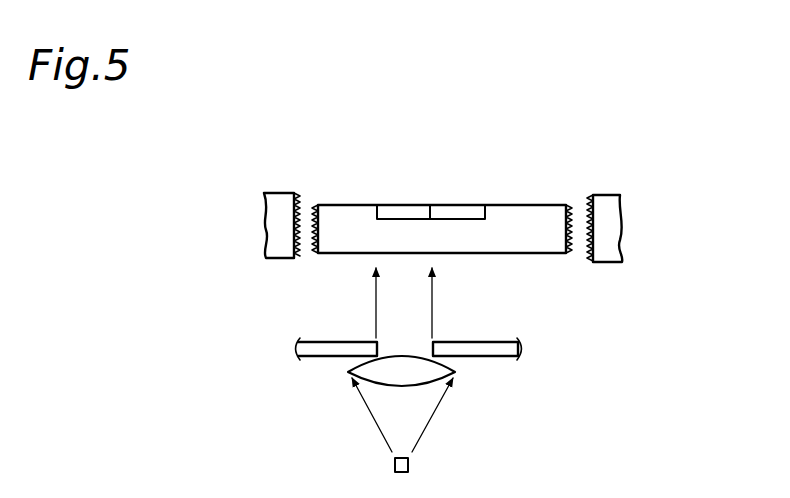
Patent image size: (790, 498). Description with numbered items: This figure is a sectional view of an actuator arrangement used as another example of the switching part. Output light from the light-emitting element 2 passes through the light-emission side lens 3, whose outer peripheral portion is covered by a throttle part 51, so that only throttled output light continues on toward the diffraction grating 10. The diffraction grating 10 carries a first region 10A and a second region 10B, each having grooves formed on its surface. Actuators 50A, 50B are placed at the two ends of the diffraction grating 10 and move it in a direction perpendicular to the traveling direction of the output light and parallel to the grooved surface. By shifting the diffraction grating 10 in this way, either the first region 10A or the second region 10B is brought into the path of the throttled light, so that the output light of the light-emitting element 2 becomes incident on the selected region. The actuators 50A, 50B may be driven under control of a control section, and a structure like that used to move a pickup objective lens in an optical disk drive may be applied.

The diffraction grating 10 is at (334, 203).
The first region 10A is at (402, 205).
The second region 10B is at (470, 205).
The actuator 50A is at (270, 213).
The actuator 50B is at (612, 222).
The throttle part 51 is at (298, 347).
The light-emission side lens 3 is at (346, 371).
The light-emitting element 2 is at (393, 464).